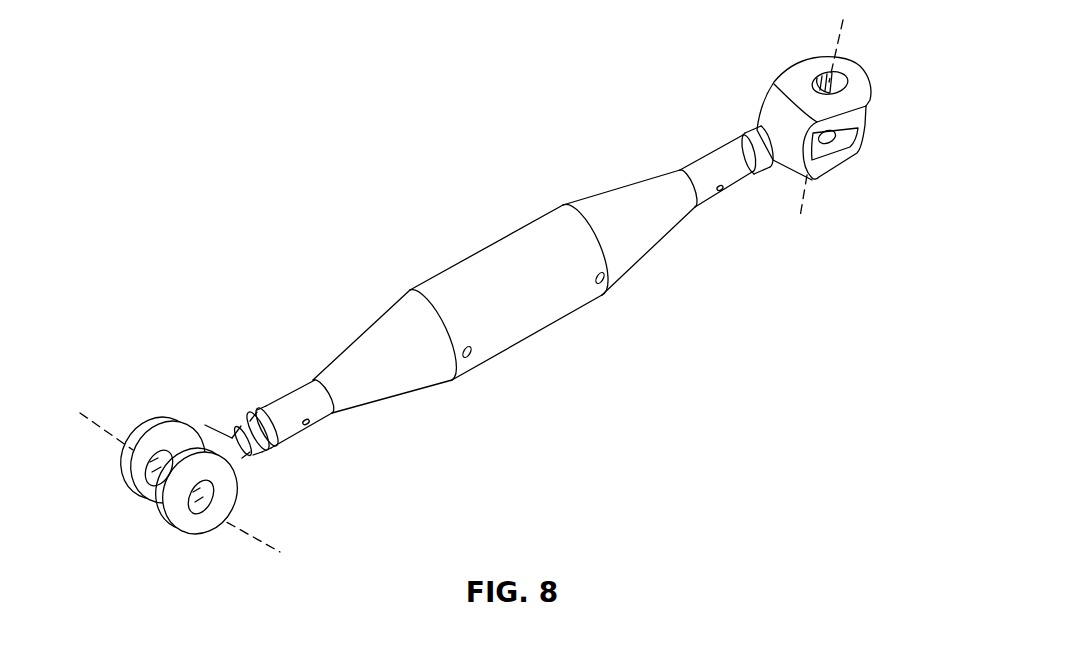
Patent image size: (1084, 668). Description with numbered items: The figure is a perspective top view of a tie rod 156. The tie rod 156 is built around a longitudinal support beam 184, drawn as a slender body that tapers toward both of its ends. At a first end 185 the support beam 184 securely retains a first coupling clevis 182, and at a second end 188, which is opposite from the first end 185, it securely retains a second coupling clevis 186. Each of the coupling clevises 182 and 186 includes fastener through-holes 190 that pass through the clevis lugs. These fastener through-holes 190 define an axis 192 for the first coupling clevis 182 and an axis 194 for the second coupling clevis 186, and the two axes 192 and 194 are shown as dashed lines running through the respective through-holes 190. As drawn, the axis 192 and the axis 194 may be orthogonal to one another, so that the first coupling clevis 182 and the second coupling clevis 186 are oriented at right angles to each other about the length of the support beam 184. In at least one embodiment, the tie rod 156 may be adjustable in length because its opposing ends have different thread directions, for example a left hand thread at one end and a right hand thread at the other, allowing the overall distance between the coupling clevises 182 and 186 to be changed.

The tie rod 156 is at (139, 224).
The coupling clevis 182 is at (807, 57).
The longitudinal support beam 184 is at (493, 243).
The first end 185 is at (725, 138).
The coupling clevis 186 is at (235, 497).
The second end 188 is at (300, 433).
The fastener through-holes 190 is at (840, 85).
The axis 192 is at (807, 196).
The axis 194 is at (260, 541).